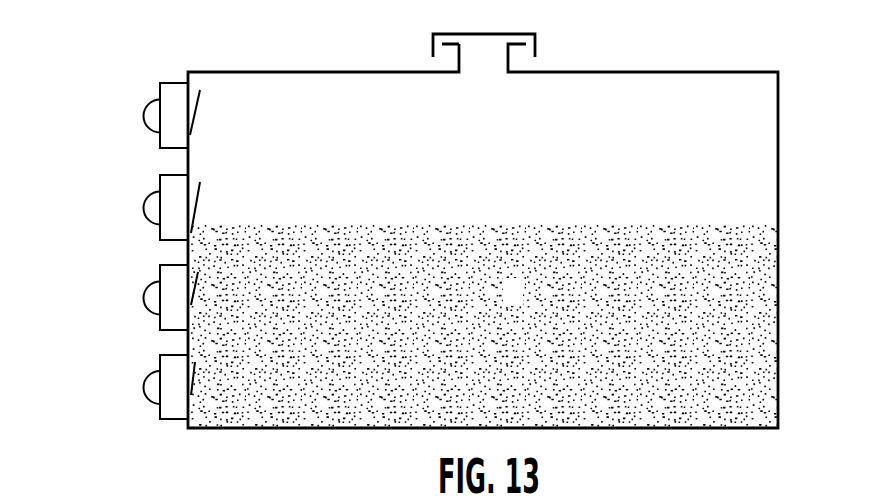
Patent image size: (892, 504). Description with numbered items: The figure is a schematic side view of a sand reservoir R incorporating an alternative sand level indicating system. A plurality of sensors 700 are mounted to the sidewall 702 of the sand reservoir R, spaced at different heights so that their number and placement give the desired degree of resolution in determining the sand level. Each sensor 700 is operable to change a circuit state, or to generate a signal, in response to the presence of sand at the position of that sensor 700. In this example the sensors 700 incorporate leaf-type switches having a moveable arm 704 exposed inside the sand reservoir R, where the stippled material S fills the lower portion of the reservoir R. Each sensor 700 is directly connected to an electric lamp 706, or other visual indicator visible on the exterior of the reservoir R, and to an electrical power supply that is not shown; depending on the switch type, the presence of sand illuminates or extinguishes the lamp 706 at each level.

The sensor 700 is at (127, 58).
The sidewall 702 is at (190, 157).
The moveable arm 704 is at (198, 200).
The electric lamp 706 is at (147, 403).
The sand reservoir R is at (752, 69).
The substance S is at (519, 304).